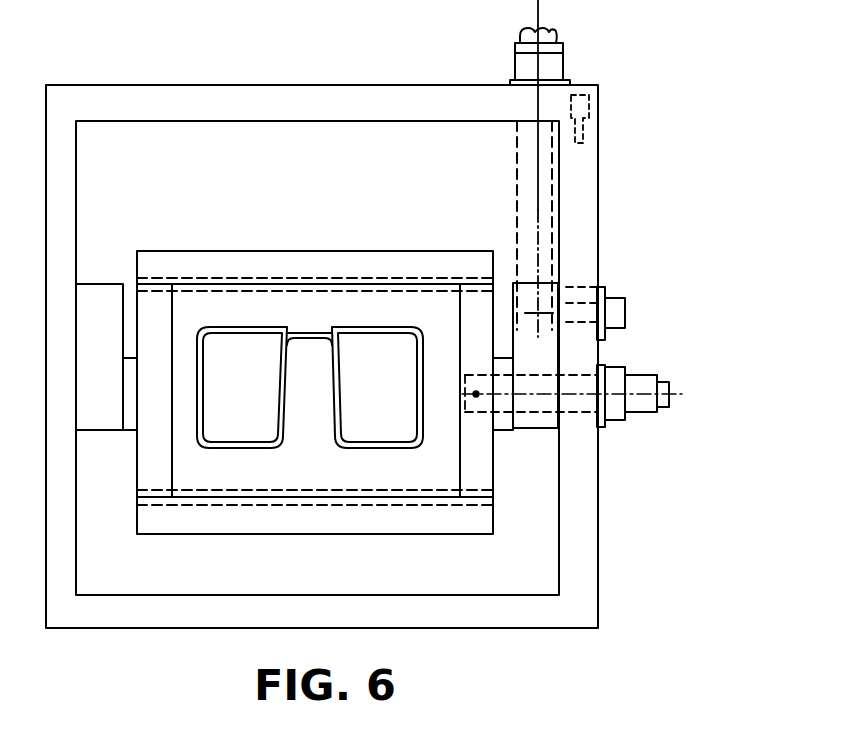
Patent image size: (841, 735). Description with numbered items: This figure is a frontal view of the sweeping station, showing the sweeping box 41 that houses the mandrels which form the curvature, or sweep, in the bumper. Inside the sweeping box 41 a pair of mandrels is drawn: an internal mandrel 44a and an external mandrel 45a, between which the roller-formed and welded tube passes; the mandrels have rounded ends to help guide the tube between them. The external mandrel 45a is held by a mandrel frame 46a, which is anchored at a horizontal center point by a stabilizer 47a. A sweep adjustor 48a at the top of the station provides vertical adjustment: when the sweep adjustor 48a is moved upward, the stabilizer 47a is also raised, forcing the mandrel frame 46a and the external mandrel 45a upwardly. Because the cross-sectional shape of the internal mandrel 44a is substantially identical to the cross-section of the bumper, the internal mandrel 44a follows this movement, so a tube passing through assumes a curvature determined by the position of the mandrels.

The sweeping box 41 is at (383, 70).
The internal mandrel 44a is at (247, 443).
The external mandrel 45a is at (340, 300).
The mandrel frame 46a is at (395, 268).
The stabilizer 47a is at (648, 376).
The sweep adjustor 48a is at (565, 62).